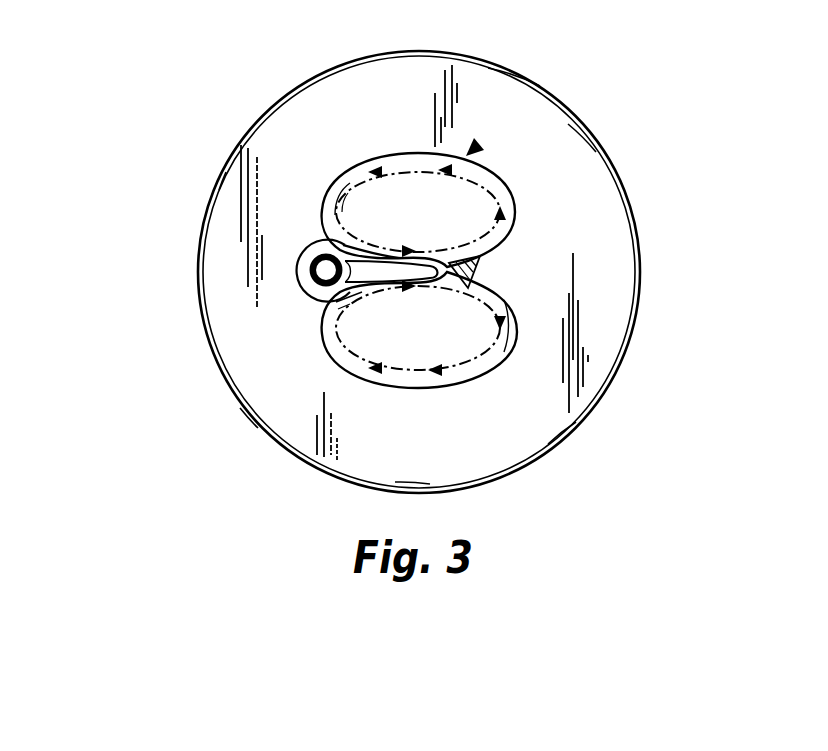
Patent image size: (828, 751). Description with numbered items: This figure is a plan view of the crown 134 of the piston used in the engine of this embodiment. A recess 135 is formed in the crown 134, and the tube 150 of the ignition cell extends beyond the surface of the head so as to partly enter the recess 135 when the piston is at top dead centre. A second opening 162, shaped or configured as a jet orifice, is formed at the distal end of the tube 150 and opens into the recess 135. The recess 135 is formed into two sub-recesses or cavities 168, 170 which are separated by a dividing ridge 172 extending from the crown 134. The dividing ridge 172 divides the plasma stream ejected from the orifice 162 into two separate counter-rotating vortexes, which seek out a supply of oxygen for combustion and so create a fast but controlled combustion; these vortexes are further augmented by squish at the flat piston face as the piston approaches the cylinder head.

The crown 134 is at (593, 190).
The recess 135 is at (466, 156).
The tube 150 is at (311, 288).
The second opening 162 is at (346, 269).
The sub-recess 168 is at (360, 204).
The sub-recess 170 is at (359, 333).
The dividing ridge 172 is at (446, 275).